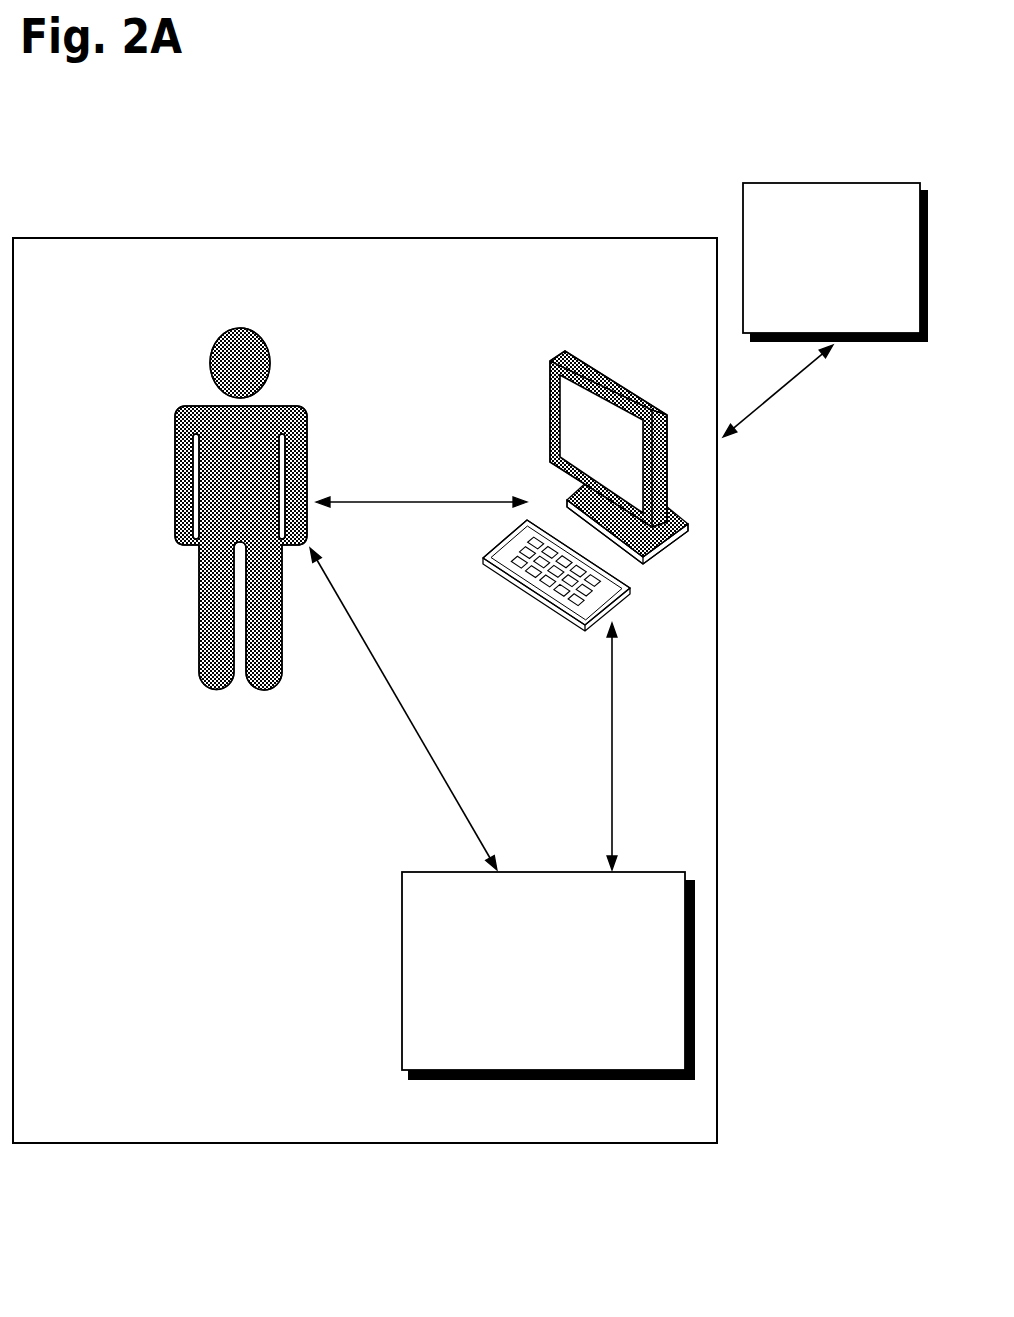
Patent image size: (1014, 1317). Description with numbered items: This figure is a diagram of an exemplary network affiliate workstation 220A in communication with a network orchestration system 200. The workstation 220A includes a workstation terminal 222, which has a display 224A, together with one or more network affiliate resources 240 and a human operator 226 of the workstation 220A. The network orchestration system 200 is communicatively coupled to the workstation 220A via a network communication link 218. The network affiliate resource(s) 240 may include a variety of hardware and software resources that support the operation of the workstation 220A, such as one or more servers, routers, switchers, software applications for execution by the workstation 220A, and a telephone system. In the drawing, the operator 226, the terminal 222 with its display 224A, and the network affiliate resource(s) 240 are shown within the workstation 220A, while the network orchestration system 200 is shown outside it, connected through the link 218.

The workstation 220A is at (635, 205).
The network orchestration system 200 is at (835, 262).
The network communication link 218 is at (777, 397).
The human operator 226 is at (175, 443).
The workstation terminal 222 is at (547, 437).
The display 224A is at (601, 444).
The network affiliate resource(s) 240 is at (566, 870).